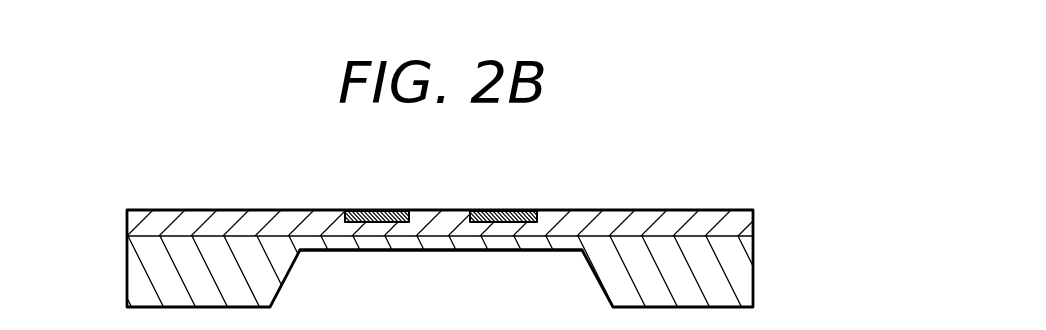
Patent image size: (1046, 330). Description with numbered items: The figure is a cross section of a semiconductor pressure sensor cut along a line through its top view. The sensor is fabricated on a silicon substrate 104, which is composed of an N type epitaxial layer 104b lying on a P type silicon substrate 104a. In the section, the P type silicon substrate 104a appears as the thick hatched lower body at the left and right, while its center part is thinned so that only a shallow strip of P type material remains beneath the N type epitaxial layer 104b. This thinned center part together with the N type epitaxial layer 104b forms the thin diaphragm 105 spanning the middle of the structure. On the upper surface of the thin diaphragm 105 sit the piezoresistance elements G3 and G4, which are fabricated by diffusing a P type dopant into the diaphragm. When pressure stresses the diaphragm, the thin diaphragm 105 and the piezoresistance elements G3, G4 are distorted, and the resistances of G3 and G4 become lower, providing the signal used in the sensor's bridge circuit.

The silicon substrate 104 is at (845, 197).
The P type silicon substrate 104a is at (742, 257).
The N type epitaxial layer 104b is at (742, 224).
The thin diaphragm 105 is at (447, 252).
The piezoresistance element G3 is at (385, 211).
The piezoresistance element G4 is at (508, 211).